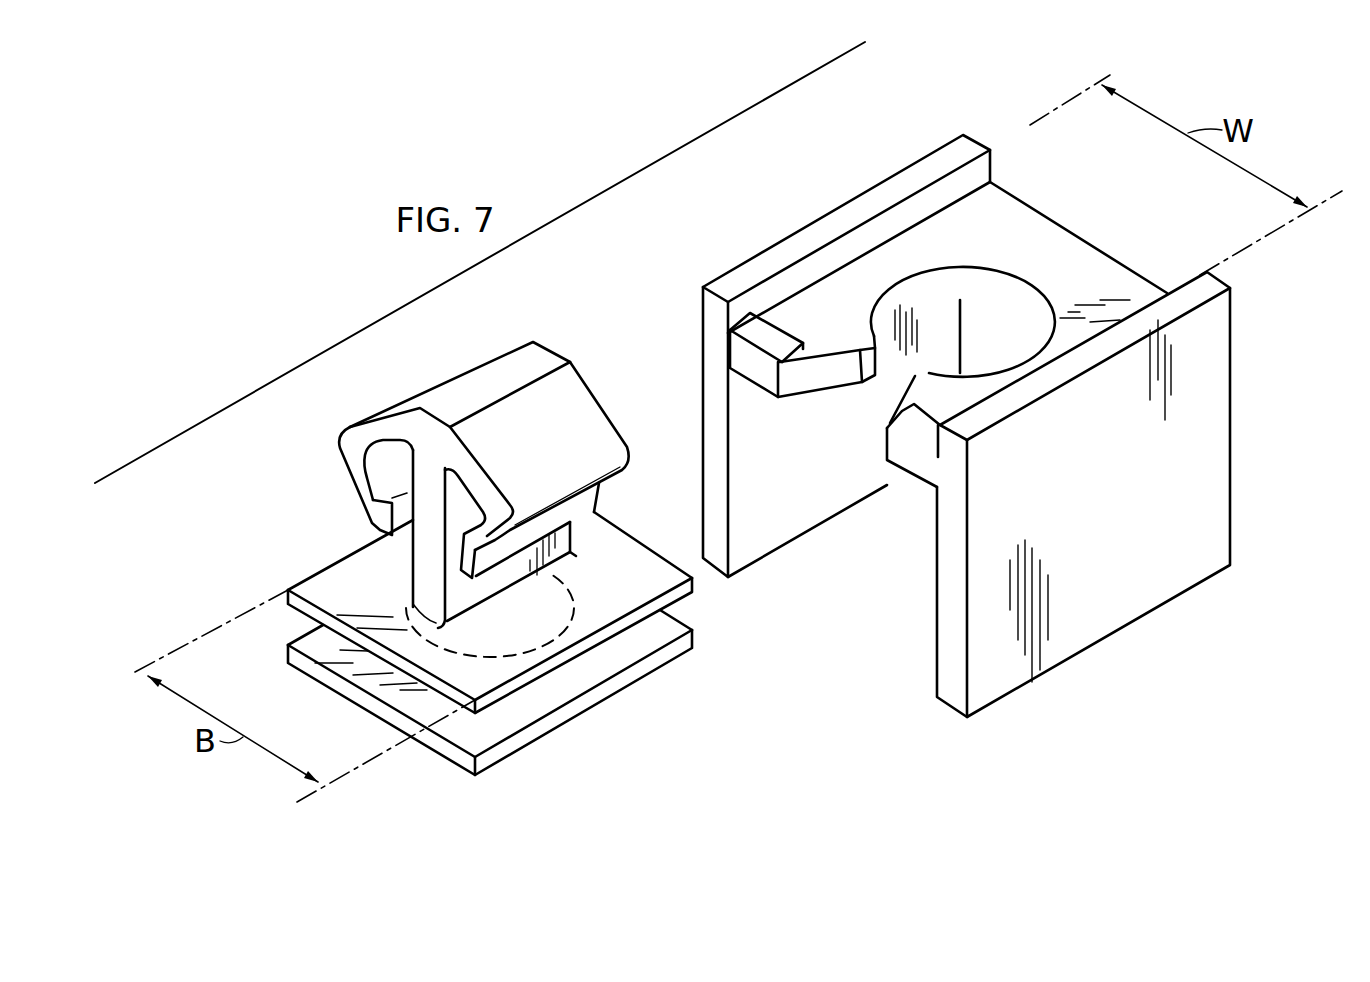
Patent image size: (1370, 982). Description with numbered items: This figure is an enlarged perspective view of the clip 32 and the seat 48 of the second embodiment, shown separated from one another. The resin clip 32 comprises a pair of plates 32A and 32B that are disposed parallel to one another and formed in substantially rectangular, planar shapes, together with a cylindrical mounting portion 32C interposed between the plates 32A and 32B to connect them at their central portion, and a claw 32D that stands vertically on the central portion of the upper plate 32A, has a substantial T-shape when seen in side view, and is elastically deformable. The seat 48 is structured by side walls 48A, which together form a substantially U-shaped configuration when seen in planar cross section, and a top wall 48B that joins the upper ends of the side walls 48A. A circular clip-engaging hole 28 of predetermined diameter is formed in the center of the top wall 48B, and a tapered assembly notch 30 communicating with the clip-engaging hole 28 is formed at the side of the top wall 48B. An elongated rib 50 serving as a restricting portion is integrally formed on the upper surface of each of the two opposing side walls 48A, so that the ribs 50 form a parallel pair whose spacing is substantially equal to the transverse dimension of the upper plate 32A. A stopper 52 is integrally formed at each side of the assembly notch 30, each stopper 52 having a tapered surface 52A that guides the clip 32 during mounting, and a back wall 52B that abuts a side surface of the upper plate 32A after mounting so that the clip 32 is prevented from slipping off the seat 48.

The clip 32 is at (489, 328).
The upper plate 32A is at (320, 583).
The lower plate 32B is at (313, 640).
The mounting portion 32C is at (513, 663).
The claw 32D is at (403, 404).
The seat 48 is at (1110, 208).
The side walls 48A is at (993, 325).
The top wall 48B is at (1113, 277).
The elongated rib 50 is at (788, 252).
The stopper 52 is at (760, 310).
The tapered surface 52A is at (754, 345).
The back wall 52B is at (785, 362).
The clip-engaging hole 28 is at (902, 293).
The assembly notch 30 is at (822, 372).